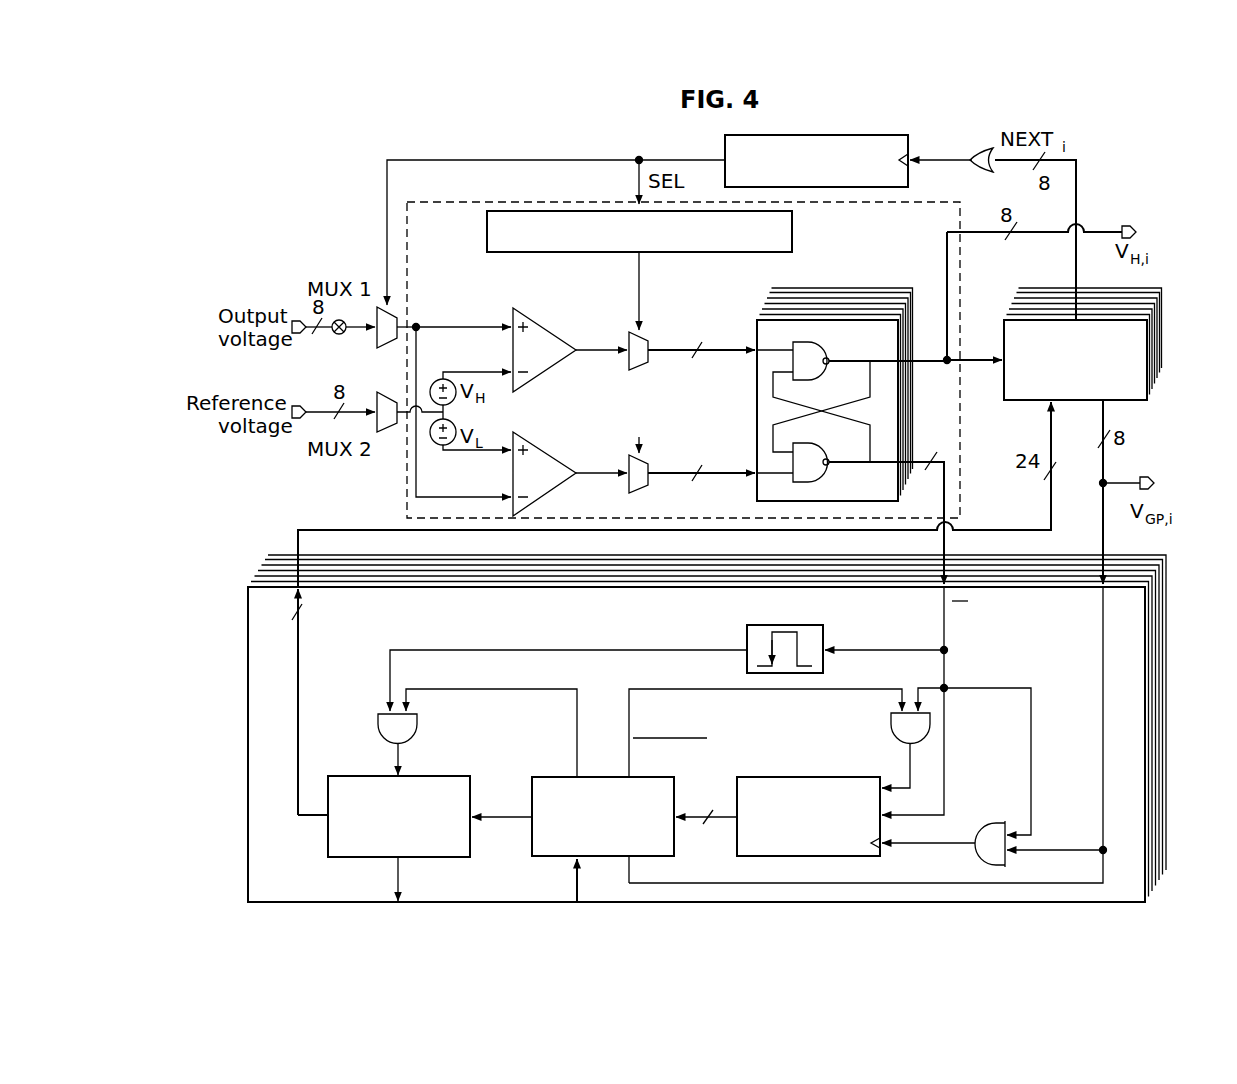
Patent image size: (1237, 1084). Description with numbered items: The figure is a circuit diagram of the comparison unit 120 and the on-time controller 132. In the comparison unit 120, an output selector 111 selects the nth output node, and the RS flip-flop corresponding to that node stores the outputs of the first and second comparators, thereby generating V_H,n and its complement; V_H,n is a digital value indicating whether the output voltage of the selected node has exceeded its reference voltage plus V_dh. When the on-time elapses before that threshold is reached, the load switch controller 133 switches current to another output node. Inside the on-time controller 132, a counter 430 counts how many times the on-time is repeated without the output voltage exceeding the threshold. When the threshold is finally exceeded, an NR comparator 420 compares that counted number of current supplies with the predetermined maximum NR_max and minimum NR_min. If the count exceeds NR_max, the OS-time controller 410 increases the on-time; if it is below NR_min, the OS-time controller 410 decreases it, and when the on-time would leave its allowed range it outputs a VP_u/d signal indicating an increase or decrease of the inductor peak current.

The output selector 111 is at (820, 132).
The comparison unit 120 is at (500, 200).
The on-time controller 132 is at (248, 742).
The load switch controller 133 is at (1150, 350).
The OS-time controller 410 is at (412, 772).
The NR comparator 420 is at (604, 775).
The counter 430 is at (808, 775).